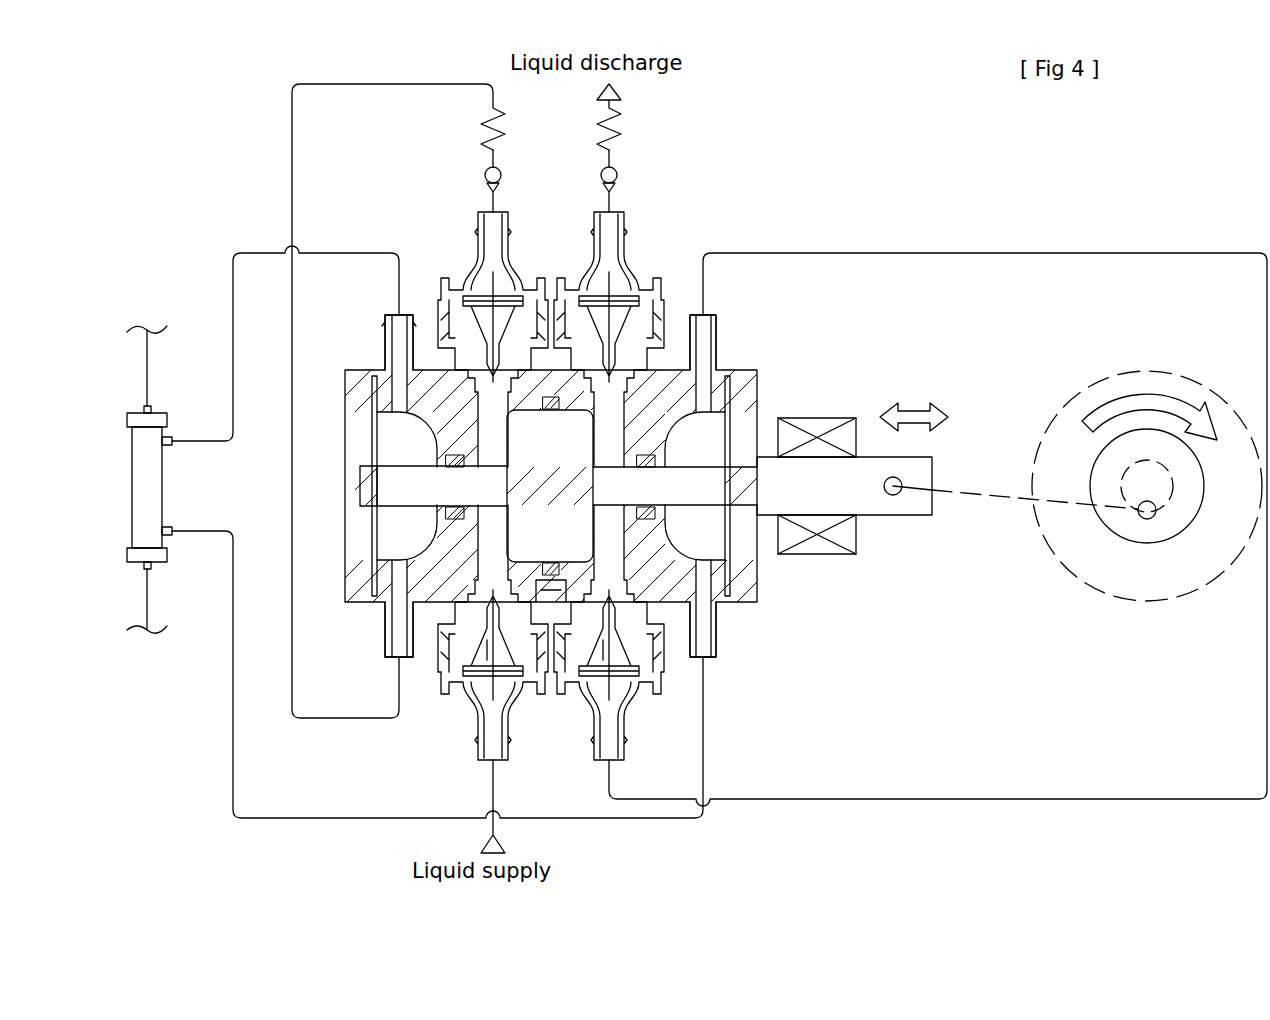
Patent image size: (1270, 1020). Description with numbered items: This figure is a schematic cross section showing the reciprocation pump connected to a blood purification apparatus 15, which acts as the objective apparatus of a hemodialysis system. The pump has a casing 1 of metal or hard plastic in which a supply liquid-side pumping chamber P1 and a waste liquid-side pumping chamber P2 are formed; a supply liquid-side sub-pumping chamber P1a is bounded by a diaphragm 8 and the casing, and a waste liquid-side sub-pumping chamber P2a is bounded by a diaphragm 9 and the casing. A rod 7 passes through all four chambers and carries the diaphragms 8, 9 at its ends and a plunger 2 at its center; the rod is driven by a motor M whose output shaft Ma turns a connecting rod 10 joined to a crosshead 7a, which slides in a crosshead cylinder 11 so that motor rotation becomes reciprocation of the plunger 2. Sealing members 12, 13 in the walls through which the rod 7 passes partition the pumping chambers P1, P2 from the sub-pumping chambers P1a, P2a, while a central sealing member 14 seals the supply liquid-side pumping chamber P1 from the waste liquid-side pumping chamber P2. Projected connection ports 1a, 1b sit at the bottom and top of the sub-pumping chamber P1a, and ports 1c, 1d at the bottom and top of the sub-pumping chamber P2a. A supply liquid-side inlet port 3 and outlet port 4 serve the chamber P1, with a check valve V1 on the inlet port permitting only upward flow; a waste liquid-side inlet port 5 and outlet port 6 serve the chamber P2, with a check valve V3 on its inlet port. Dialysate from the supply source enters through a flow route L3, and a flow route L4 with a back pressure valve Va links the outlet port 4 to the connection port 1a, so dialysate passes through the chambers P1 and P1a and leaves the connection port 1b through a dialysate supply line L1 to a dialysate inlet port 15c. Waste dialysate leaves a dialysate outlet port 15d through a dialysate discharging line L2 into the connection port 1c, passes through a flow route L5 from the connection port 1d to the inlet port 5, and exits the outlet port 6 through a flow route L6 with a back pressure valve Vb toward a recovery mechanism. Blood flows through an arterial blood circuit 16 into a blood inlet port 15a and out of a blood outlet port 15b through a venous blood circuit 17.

The casing 1 is at (345, 372).
The projected connection port 1a is at (385, 633).
The projected connection port 1b is at (385, 350).
The projected connection port 1c is at (716, 638).
The projected connection port 1d is at (716, 338).
The plunger 2 is at (507, 546).
The supply liquid-side inlet port 3 is at (478, 718).
The supply liquid-side outlet port 4 is at (478, 236).
The waste liquid-side inlet port 5 is at (625, 736).
The waste liquid-side outlet port 6 is at (625, 230).
The rod 7 is at (362, 482).
The crosshead 7a is at (920, 516).
The diaphragm 8 is at (375, 430).
The diaphragm 9 is at (730, 395).
The connecting rod 10 is at (1004, 500).
The crosshead cylinder 11 is at (825, 418).
The sealing member 12 is at (446, 512).
The sealing member 13 is at (660, 515).
The central sealing member 14 is at (556, 625).
The blood purification apparatus 15 is at (132, 470).
The blood inlet port 15a is at (143, 563).
The blood outlet port 15b is at (143, 409).
The dialysate inlet port 15c is at (172, 445).
The dialysate outlet port 15d is at (172, 529).
The arterial blood circuit 16 is at (147, 610).
The venous blood circuit 17 is at (147, 339).
The dialysate supply line L1 is at (233, 300).
The dialysate discharging line L2 is at (233, 770).
The flow route L3 is at (493, 784).
The flow route L4 is at (292, 207).
The flow route L5 is at (938, 253).
The flow route L6 is at (612, 105).
The back pressure valve Va is at (485, 175).
The back pressure valve Vb is at (617, 175).
The check valve V1 is at (486, 668).
The check valve V3 is at (612, 676).
The motor M is at (1168, 368).
The output shaft Ma is at (1094, 462).
The supply liquid-side pumping chamber P1 is at (508, 457).
The supply liquid-side sub-pumping chamber P1a is at (426, 457).
The waste liquid-side pumping chamber P2 is at (628, 457).
The waste liquid-side sub-pumping chamber P2a is at (721, 457).